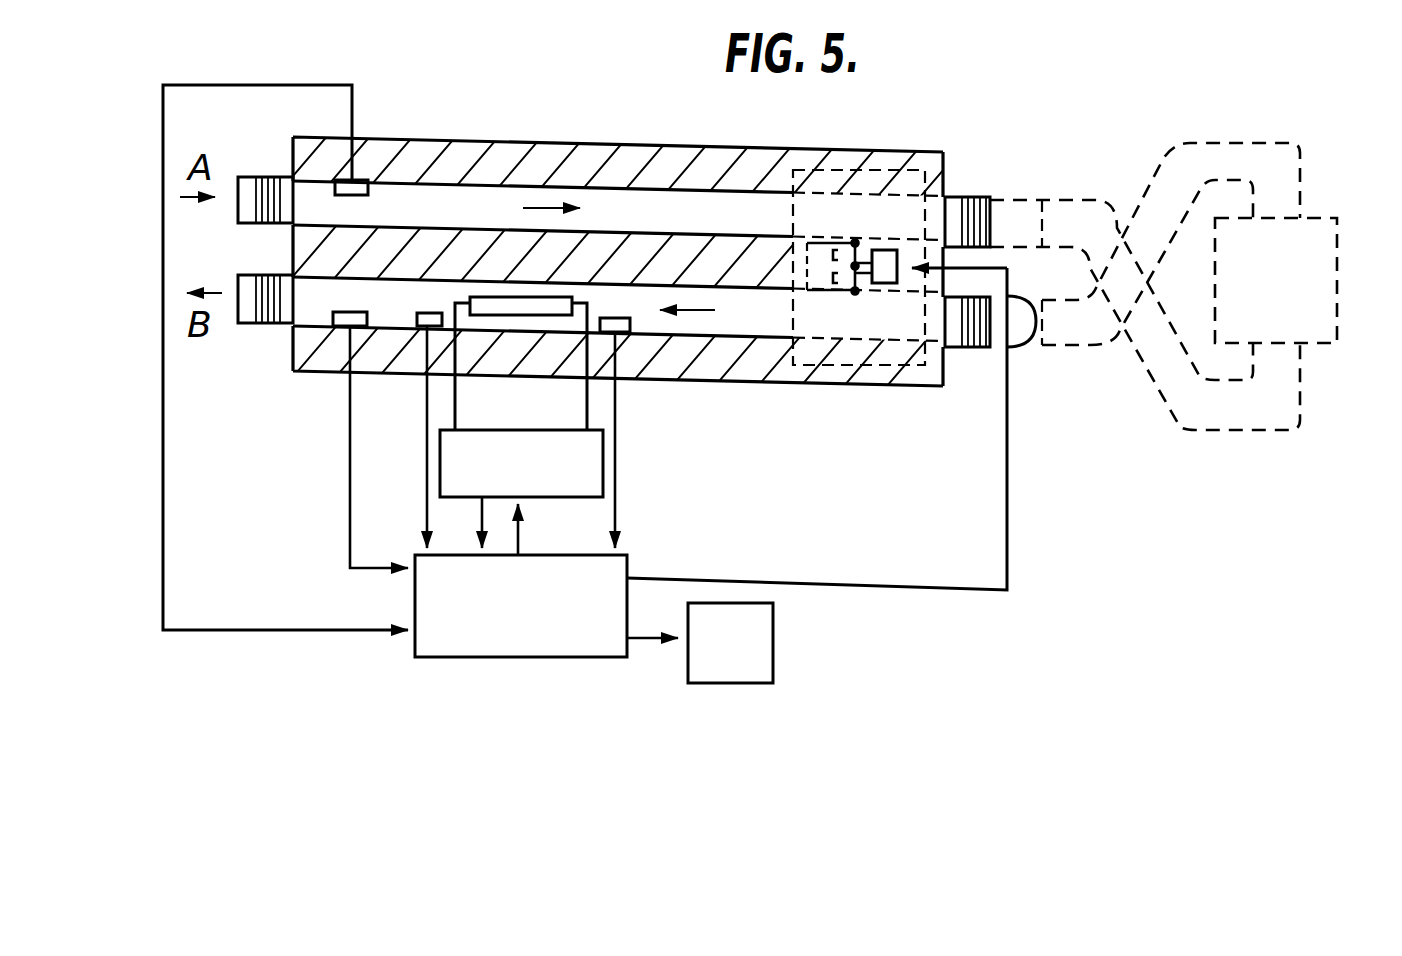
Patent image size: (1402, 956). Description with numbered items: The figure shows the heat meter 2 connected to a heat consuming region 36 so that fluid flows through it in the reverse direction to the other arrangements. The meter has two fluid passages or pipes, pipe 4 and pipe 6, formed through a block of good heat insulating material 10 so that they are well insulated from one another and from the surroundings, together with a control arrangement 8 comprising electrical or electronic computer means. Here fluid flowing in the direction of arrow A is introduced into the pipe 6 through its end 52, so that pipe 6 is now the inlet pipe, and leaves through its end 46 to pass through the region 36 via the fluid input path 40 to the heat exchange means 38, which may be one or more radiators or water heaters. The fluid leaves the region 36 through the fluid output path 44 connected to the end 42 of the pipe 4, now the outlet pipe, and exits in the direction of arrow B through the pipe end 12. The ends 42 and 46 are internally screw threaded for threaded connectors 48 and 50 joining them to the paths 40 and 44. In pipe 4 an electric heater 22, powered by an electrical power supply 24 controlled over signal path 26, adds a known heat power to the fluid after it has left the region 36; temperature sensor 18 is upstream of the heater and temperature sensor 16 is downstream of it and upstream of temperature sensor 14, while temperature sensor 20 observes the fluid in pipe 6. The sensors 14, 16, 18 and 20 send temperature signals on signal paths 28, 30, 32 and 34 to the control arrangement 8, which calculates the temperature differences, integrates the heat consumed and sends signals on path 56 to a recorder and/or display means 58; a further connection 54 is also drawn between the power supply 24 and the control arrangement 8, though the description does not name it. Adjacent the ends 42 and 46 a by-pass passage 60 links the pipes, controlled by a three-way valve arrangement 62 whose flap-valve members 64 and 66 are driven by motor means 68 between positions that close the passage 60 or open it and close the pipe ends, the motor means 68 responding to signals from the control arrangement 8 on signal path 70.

The heat meter 2 is at (1030, 446).
The fluid passage or pipe 4 is at (748, 340).
The fluid passage or pipe 6 is at (713, 200).
The control arrangement 8 is at (530, 618).
The block of heat insulating material 10 is at (458, 150).
The end of pipe 4 12 is at (258, 325).
The temperature sensor 14 is at (345, 330).
The temperature sensor 16 is at (428, 330).
The temperature sensor 18 is at (620, 333).
The temperature sensor 20 is at (357, 180).
The electric heater 22 is at (512, 318).
The electrical power supply 24 is at (541, 484).
The signal path 26 is at (520, 533).
The signal path 28 is at (350, 452).
The signal path 30 is at (427, 452).
The signal path 32 is at (615, 462).
The signal path 34 is at (168, 447).
The heat consuming region 36 is at (1322, 188).
The heat exchange means 38 is at (1302, 298).
The fluid input path 40 is at (1157, 393).
The end of pipe 4 42 is at (968, 348).
The fluid output path 44 is at (1167, 163).
The end of pipe 6 46 is at (968, 215).
The threaded connector 48 is at (1047, 322).
The threaded connector 50 is at (1013, 217).
The end of pipe 6 52 is at (258, 195).
The control line 54 is at (480, 517).
The signal path 56 is at (650, 640).
The recorder and/or display means 58 is at (752, 658).
The by-pass passage 60 is at (812, 237).
The three-way valve arrangement 62 is at (885, 258).
The flap-valve member 64 is at (820, 285).
The flap-valve member 66 is at (840, 237).
The motor means 68 is at (925, 177).
The signal path 70 is at (990, 473).